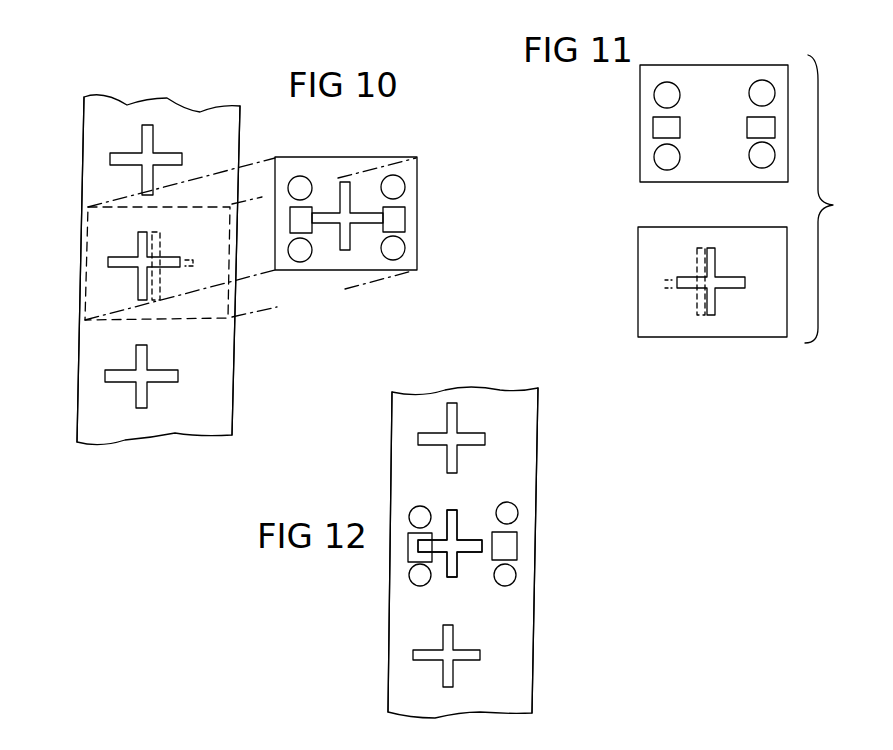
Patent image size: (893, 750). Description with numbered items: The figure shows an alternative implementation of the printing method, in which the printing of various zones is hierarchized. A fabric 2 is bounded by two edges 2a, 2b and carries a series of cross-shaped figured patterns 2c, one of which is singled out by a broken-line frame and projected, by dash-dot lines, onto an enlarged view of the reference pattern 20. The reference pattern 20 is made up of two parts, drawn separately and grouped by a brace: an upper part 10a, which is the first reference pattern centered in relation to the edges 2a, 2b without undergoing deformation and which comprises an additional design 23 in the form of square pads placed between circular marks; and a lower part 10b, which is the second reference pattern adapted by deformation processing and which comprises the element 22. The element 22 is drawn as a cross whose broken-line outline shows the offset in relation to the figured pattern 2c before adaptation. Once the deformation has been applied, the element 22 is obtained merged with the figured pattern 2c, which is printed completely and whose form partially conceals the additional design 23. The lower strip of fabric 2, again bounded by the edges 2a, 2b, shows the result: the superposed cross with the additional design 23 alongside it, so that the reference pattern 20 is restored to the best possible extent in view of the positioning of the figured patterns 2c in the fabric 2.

In FIG. 10, the fabric 2 is at (186, 418).
In FIG. 12, the fabric 2 is at (512, 423).
In FIG. 10, the edge 2a is at (78, 383).
In FIG. 12, the edge 2a is at (388, 632).
In FIG. 10, the edge 2b is at (233, 393).
In FIG. 12, the edge 2b is at (534, 633).
In FIG. 10, the figured pattern 2c is at (152, 133).
In FIG. 11, the figured pattern 2c is at (701, 311).
In FIG. 12, the figured pattern 2c is at (452, 512).
In FIG. 10, the reference pattern 20 is at (430, 194).
In FIG. 11, the reference pattern 20 is at (832, 199).
In FIG. 11, the upper part with holes and squares 10a is at (638, 138).
In FIG. 11, the lower part with cross opening 10b is at (634, 284).
In FIG. 11, the element 22 is at (728, 287).
In FIG. 12, the element 22 is at (518, 524).
In FIG. 10, the additional design 23 is at (290, 210).
In FIG. 11, the additional design 23 is at (748, 124).
In FIG. 12, the additional design 23 is at (517, 547).